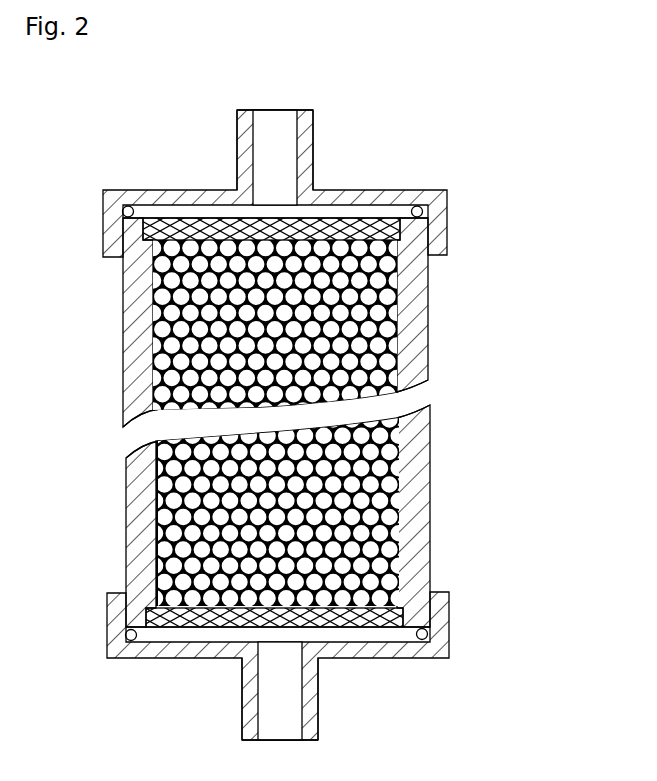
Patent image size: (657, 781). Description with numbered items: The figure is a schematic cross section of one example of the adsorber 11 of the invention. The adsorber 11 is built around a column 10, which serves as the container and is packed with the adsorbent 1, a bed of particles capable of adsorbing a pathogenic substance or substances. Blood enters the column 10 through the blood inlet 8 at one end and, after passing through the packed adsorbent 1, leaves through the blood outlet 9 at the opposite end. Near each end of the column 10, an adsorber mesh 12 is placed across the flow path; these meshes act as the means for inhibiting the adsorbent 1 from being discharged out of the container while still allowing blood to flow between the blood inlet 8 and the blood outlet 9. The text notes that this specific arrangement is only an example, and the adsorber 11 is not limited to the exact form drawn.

The adsorbent 1 is at (313, 455).
The blood inlet 8 is at (293, 705).
The blood outlet 9 is at (280, 155).
The column 10 is at (413, 352).
The adsorber 11 is at (447, 190).
The adsorber mesh 12 is at (385, 230).